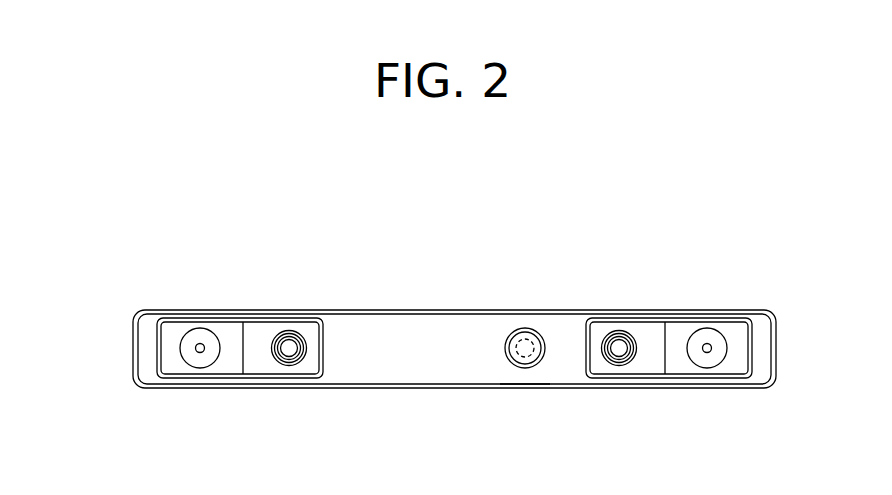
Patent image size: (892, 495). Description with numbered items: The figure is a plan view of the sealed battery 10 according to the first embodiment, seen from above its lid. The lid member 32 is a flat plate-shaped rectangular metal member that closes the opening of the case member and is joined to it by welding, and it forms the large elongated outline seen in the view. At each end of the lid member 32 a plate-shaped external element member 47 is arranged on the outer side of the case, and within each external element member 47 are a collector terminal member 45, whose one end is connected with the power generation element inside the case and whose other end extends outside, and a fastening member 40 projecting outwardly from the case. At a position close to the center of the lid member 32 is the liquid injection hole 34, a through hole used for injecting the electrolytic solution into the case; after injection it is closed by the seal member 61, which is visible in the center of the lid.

The sealed battery 10 is at (140, 283).
The lid member 32 is at (418, 338).
The liquid injection hole 34 is at (525, 368).
The fastening members 40 is at (290, 348).
The collector terminal members 45 is at (200, 336).
The external element members 47 is at (255, 338).
The seal member 61 is at (527, 333).